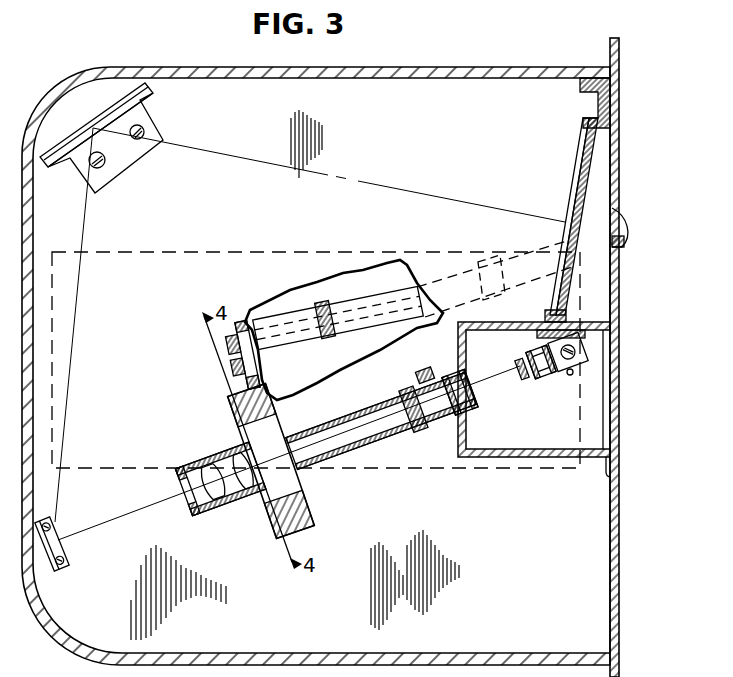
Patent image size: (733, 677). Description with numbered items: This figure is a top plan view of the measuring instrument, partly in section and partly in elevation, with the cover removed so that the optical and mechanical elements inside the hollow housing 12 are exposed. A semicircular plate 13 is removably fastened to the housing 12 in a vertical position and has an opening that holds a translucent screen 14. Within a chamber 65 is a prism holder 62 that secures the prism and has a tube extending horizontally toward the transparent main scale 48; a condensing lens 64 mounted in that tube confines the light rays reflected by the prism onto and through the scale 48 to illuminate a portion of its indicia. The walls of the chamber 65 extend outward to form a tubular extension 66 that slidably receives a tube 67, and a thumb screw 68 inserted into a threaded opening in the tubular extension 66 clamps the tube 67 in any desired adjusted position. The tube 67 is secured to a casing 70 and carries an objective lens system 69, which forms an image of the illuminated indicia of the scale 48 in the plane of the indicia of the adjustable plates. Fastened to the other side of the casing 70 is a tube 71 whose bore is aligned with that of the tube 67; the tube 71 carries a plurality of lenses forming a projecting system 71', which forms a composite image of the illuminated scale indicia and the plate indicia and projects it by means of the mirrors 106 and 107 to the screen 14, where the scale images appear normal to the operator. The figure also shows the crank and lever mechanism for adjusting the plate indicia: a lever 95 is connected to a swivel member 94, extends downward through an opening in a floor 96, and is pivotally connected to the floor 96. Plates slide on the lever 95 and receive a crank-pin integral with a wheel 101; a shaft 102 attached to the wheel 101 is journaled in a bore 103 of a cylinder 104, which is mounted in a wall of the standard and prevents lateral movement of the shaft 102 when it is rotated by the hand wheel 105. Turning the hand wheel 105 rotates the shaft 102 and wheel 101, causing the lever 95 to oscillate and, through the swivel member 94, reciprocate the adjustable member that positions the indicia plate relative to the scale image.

The hollow housing 12 is at (425, 60).
The semicircular plate 13 is at (616, 58).
The translucent screen 14 is at (592, 178).
The transparent main scale 48 is at (522, 378).
The prism holder 62 is at (595, 362).
The condensing lens 64 is at (540, 382).
The chamber 65 is at (596, 414).
The tubular extension 66 is at (441, 408).
The tube 67 is at (355, 446).
The thumb screw 68 is at (424, 366).
The objective lens system 69 is at (453, 440).
The casing 70 is at (306, 508).
The tube 71 is at (220, 493).
The projecting system 71' is at (202, 461).
The swivel member 94 is at (240, 362).
The lever 95 is at (242, 330).
The floor 96 is at (310, 325).
The wheel 101 is at (258, 324).
The shaft 102 is at (505, 262).
The bore 103 is at (348, 318).
The cylinder 104 is at (318, 320).
The hand wheel 105 is at (628, 232).
The mirror 106 is at (70, 550).
The mirror 107 is at (137, 80).